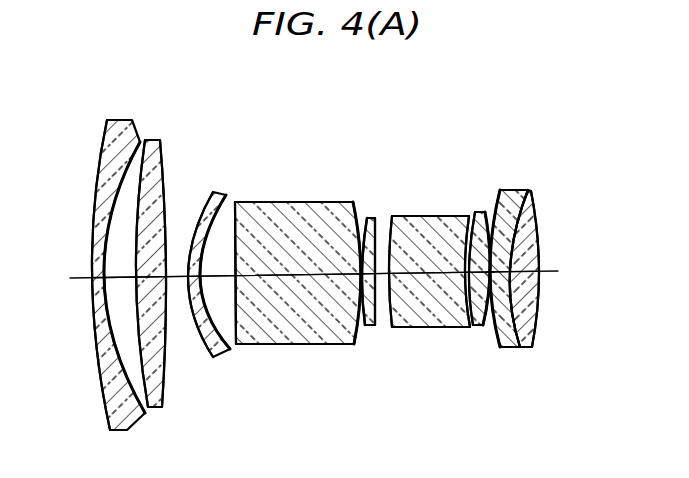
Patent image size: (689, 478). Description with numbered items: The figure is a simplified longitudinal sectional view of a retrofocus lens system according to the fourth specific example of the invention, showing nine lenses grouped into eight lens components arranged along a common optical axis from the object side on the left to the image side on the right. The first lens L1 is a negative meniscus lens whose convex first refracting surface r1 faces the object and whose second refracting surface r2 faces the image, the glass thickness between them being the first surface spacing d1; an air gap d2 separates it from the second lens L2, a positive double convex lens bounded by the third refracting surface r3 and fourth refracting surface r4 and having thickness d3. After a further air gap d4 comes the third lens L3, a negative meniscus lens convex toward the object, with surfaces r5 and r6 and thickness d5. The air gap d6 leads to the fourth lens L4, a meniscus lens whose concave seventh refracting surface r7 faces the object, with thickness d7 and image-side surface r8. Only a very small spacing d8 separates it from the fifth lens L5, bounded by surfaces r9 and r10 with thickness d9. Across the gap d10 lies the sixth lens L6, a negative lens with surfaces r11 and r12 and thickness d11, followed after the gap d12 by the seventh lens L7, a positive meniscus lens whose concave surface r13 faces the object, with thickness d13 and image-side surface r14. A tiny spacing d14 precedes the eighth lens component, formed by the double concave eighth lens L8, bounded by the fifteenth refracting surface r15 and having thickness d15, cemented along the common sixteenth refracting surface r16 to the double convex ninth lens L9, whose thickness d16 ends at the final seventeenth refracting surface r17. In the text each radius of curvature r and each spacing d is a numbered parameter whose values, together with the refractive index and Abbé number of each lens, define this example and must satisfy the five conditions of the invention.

The first lens L1 is at (120, 120).
The second lens L2 is at (158, 138).
The third lens L3 is at (215, 190).
The fourth lens L4 is at (288, 203).
The fifth lens L5 is at (370, 217).
The sixth lens L6 is at (422, 215).
The seventh lens L7 is at (480, 211).
The eighth lens L8 is at (523, 190).
The ninth lens L9 is at (537, 242).
The first refracting surface r1 is at (105, 137).
The second refracting surface r2 is at (141, 139).
The third refracting surface r3 is at (150, 137).
The fourth refracting surface r4 is at (165, 148).
The fifth refracting surface r5 is at (203, 203).
The sixth refracting surface r6 is at (228, 200).
The seventh refracting surface r7 is at (240, 203).
The eighth refracting surface r8 is at (348, 205).
The ninth refracting surface r9 is at (362, 216).
The tenth refracting surface r10 is at (376, 222).
The eleventh refracting surface r11 is at (397, 216).
The twelfth refracting surface r12 is at (458, 216).
The thirteenth refracting surface r13 is at (472, 212).
The fourteenth refracting surface r14 is at (486, 212).
The fifteenth refracting surface r15 is at (500, 188).
The sixteenth refracting surface r16 is at (527, 192).
The seventeenth refracting surface r17 is at (535, 205).
The first surface spacing d1 is at (93, 293).
The second surface spacing d2 is at (118, 281).
The third surface spacing d3 is at (147, 281).
The fourth surface spacing d4 is at (176, 282).
The fifth surface spacing d5 is at (203, 282).
The sixth surface spacing d6 is at (217, 276).
The seventh surface spacing d7 is at (285, 277).
The eighth surface spacing d8 is at (358, 273).
The ninth surface spacing d9 is at (357, 280).
The tenth surface spacing d10 is at (383, 272).
The eleventh surface spacing d11 is at (407, 277).
The twelfth surface spacing d12 is at (463, 277).
The thirteenth surface spacing d13 is at (470, 323).
The fourteenth surface spacing d14 is at (483, 327).
The fifteenth surface spacing d15 is at (514, 312).
The sixteenth surface spacing d16 is at (520, 275).